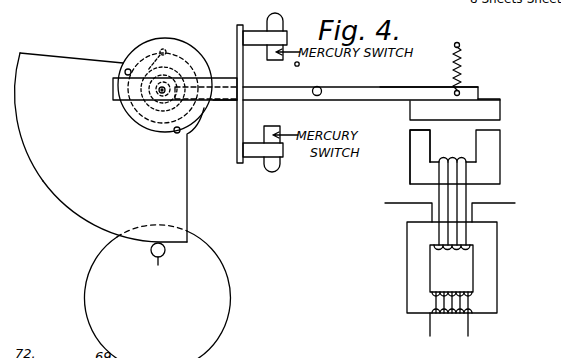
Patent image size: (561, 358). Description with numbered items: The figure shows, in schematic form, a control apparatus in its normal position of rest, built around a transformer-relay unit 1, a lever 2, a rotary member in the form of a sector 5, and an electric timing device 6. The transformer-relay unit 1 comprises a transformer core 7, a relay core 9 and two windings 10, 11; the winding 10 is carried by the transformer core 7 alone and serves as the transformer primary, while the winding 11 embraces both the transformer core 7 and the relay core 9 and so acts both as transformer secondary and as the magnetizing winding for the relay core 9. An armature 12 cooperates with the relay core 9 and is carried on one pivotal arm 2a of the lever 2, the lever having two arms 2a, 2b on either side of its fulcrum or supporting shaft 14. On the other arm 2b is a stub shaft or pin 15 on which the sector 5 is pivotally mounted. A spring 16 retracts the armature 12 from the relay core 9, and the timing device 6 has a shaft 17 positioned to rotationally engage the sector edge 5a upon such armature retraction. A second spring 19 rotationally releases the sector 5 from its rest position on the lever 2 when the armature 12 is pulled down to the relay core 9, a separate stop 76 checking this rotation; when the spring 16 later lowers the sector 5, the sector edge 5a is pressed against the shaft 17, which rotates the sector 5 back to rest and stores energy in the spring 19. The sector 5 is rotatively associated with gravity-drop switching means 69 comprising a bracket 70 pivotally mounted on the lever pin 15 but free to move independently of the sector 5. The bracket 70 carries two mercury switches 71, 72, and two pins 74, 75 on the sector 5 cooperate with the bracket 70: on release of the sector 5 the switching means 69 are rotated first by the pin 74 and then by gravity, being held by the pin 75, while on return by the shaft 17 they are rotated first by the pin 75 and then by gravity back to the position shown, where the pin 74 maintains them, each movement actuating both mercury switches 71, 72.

The transformer-relay unit 1 is at (508, 160).
The lever 2 is at (354, 83).
The pivotal arm 2a is at (403, 89).
The pivotal arm 2b is at (283, 93).
The sector 5 is at (54, 76).
The sector edge 5a is at (47, 179).
The electric timing device 6 is at (237, 304).
The transformer core 7 is at (491, 271).
The relay core 9 is at (412, 150).
The winding 10 is at (451, 290).
The winding 11 is at (438, 193).
The armature 12 is at (500, 105).
The supporting shaft 14 is at (319, 96).
The stub shaft or pin 15 is at (160, 93).
The spring 16 is at (462, 61).
The shaft 17 is at (157, 264).
The second spring 19 is at (151, 68).
The gravity-drop switching means 69 is at (236, 36).
The bracket 70 is at (232, 100).
The mercury switch 71 is at (281, 20).
The mercury switch 72 is at (273, 172).
The pin 74 is at (125, 68).
The pin 75 is at (177, 134).
The stop 76 is at (296, 66).